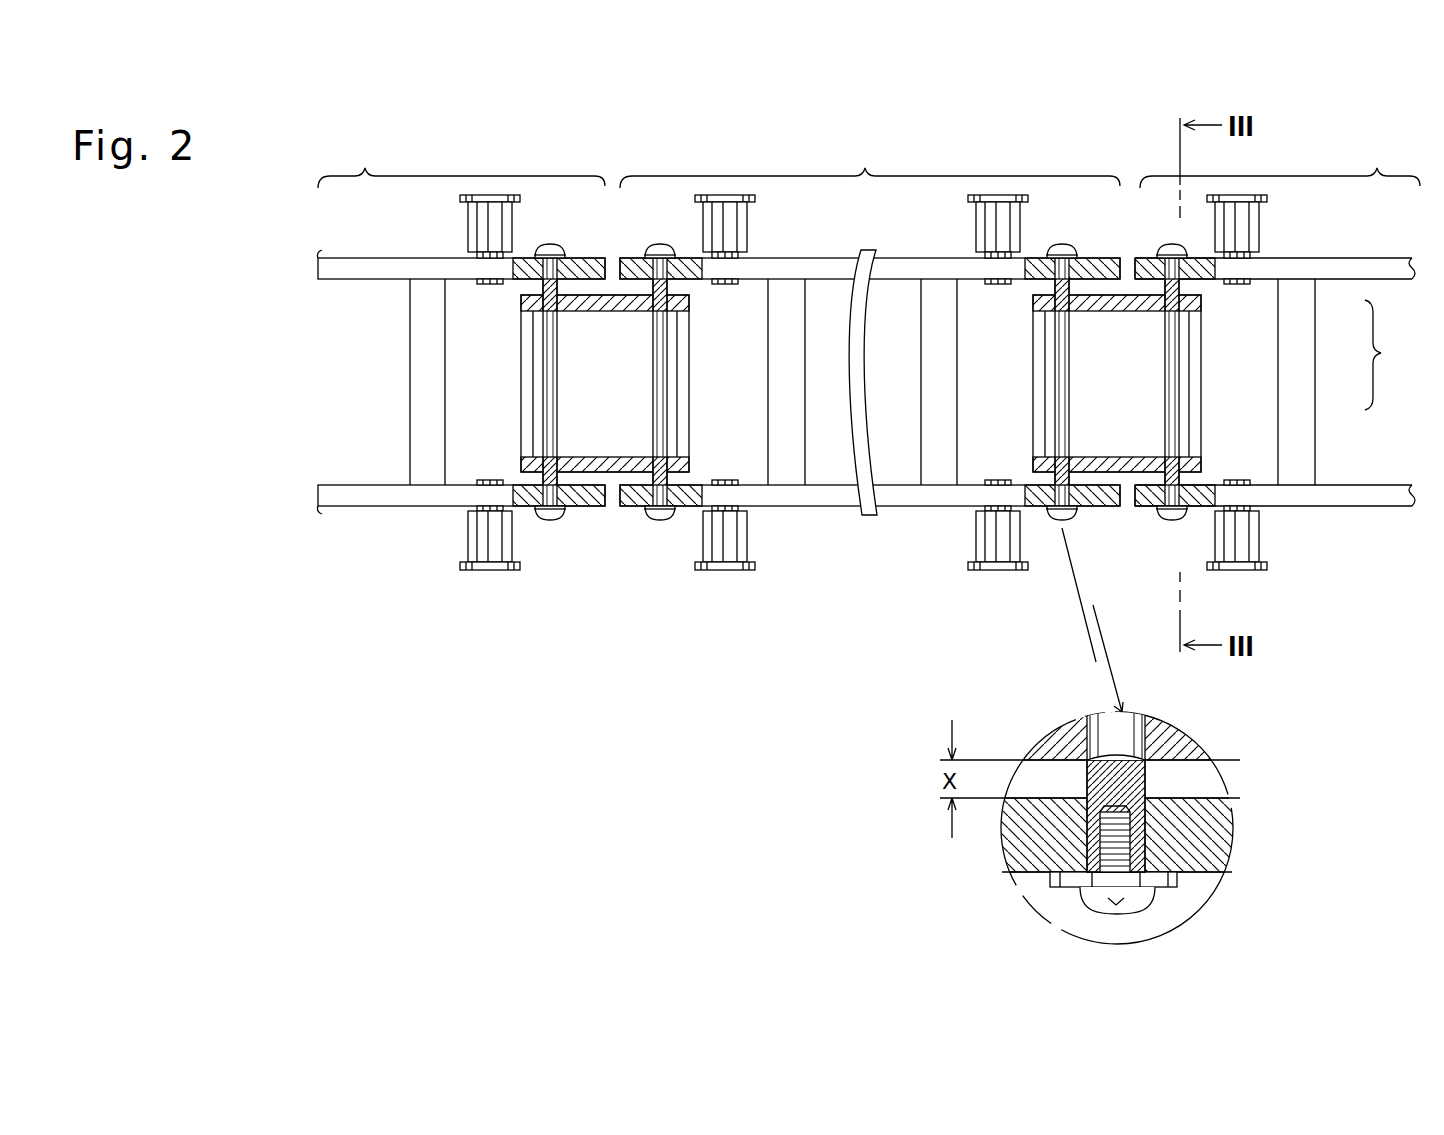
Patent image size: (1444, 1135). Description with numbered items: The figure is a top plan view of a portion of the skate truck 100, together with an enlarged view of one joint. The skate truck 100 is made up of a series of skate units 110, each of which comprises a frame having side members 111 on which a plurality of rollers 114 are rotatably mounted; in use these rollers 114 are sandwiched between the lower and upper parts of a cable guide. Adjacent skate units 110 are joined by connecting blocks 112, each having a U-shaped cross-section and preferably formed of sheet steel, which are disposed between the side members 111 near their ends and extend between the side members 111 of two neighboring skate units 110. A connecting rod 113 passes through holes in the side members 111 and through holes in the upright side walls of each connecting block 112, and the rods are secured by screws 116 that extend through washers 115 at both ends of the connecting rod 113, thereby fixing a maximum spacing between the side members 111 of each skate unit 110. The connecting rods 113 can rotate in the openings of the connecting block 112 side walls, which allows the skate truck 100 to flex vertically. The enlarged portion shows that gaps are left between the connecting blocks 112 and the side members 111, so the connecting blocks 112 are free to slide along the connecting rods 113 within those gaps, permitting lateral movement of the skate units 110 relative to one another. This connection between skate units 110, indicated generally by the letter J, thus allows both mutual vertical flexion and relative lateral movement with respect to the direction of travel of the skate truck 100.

The skate truck 100 is at (784, 606).
The skate unit 110 is at (869, 161).
The side member 111 is at (352, 262).
The connecting block 112 is at (681, 383).
The connecting rod 113 is at (542, 285).
The roller 114 is at (468, 215).
The washer 115 is at (1180, 880).
The screw 116 is at (1135, 905).
The connection of the skate units J is at (1410, 369).